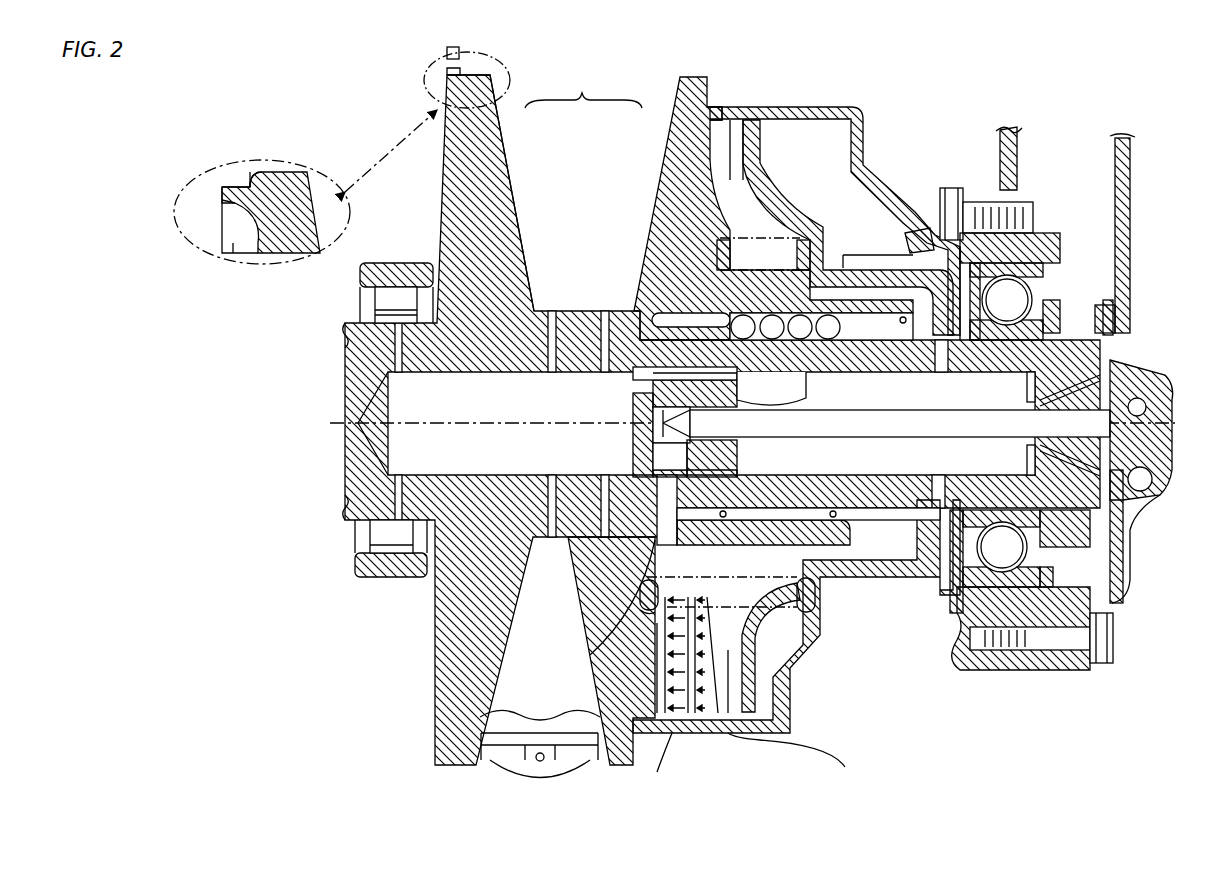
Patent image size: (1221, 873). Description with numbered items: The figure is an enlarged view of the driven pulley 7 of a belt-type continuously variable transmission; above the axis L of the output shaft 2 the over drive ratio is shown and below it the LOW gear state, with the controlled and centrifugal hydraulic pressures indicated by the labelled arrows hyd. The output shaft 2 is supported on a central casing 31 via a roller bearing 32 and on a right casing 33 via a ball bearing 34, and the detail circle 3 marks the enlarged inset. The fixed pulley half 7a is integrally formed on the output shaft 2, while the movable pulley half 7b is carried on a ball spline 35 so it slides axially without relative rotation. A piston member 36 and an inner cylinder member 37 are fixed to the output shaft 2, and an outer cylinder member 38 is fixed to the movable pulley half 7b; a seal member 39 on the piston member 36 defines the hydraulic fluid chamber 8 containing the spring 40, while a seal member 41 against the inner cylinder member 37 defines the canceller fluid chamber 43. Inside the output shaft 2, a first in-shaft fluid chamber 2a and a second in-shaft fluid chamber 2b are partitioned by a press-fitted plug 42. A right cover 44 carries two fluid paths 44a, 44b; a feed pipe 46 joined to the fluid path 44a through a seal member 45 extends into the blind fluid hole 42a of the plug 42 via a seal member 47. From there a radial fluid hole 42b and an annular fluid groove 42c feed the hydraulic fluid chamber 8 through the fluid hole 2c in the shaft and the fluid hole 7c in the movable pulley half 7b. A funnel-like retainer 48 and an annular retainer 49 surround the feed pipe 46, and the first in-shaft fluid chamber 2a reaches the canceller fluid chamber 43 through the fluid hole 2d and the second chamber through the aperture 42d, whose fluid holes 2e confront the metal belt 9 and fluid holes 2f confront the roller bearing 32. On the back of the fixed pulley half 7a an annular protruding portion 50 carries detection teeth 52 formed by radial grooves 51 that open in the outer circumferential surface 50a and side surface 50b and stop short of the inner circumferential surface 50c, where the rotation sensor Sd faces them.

The output shaft 2 is at (345, 500).
The first in-shaft fluid chamber 2a is at (880, 388).
The second in-shaft fluid chamber 2b is at (696, 423).
The fluid hole 2c is at (592, 620).
The fluid hole 2d is at (941, 372).
The fluid holes 2e is at (604, 312).
The fluid holes 2f is at (399, 370).
The detail view reference 3 is at (435, 103).
The driven pulley 7 is at (583, 89).
The fixed pulley half 7a is at (508, 183).
The movable pulley half 7b is at (655, 195).
The fluid hole 7c is at (690, 562).
The hydraulic fluid chamber 8 is at (735, 164).
The metal belt 9 is at (553, 708).
The central casing 31 is at (402, 287).
The roller bearing 32 is at (400, 300).
The right casing 33 is at (1017, 190).
The ball bearing 34 is at (1015, 285).
The ball spline 35 is at (795, 340).
The piston member 36 is at (780, 223).
The inner cylinder member 37 is at (905, 258).
The outer cylinder member 38 is at (830, 107).
The seal member 39 is at (750, 107).
The spring 40 is at (760, 254).
The seal member 41 is at (893, 268).
The plug 42 is at (631, 440).
The blind fluid hole 42a is at (633, 413).
The fluid hole 42b is at (720, 445).
The annular fluid groove 42c is at (730, 474).
The aperture 42d is at (650, 383).
The canceller fluid chamber 43 is at (806, 148).
The right cover 44 is at (1105, 195).
The fluid path 44a is at (1155, 400).
The fluid path 44b is at (1147, 487).
The seal member 45 is at (1110, 330).
The feed pipe 46 is at (850, 437).
The seal member 47 is at (805, 388).
The funnel-like retainer 48 is at (1070, 425).
The annular retainer 49 is at (1027, 385).
The annular protruding portion 50 is at (430, 78).
The outer circumferential surface 50a is at (250, 178).
The side surface 50b is at (226, 195).
The inner circumferential surface 50c is at (235, 253).
The grooves 51 is at (470, 62).
The detection teeth 52 is at (228, 185).
The rotation sensor Sd is at (447, 54).
The axis L is at (535, 420).
The hydraulic pressure arrows hyd is at (743, 722).